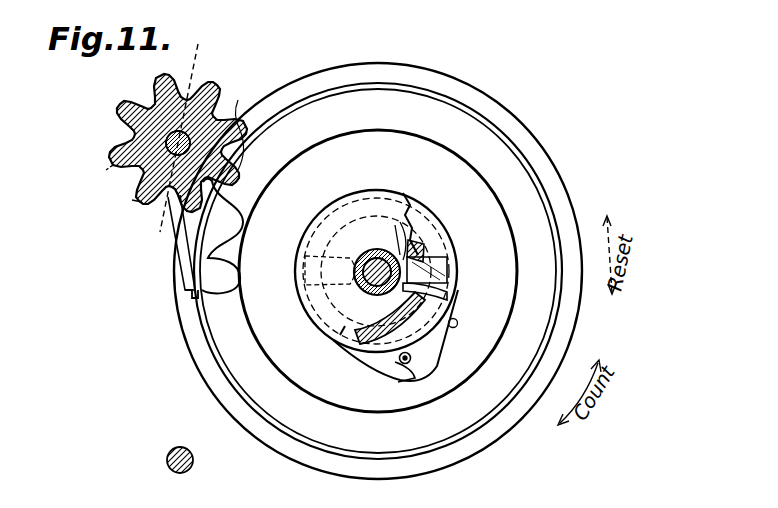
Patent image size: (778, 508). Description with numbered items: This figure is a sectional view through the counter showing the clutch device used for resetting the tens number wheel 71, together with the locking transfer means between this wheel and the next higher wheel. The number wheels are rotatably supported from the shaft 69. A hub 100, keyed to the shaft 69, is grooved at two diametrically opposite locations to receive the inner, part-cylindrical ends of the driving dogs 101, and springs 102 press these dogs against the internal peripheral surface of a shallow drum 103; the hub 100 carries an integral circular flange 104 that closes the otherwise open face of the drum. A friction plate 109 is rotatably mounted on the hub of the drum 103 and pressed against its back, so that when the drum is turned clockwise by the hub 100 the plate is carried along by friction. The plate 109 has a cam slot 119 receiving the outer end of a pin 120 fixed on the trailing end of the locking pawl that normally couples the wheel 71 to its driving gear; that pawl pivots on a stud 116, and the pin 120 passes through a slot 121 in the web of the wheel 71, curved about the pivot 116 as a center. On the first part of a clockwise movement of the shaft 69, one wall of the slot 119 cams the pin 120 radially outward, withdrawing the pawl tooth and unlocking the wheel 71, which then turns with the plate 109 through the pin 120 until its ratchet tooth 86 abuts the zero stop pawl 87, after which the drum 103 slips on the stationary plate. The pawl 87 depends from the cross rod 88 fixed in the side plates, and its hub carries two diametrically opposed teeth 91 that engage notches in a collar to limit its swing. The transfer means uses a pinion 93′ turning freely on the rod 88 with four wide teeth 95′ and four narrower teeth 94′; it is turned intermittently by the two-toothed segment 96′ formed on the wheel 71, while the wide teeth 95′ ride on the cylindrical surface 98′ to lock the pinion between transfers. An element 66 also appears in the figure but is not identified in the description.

The number wheel 71 is at (551, 174).
The cylindrical surface 98′ is at (553, 320).
The circular flange 104 is at (370, 173).
The shaft 69 is at (383, 258).
The hub 100 is at (410, 250).
The shallow drum 103 is at (447, 240).
The driving dogs 101 is at (304, 280).
The springs 102 is at (450, 290).
The pin 120 is at (398, 368).
The friction plate 109 is at (383, 365).
The stud 116 is at (458, 323).
The cam slot 119 is at (411, 357).
The slot 121 is at (405, 380).
The pinion 93′ is at (106, 146).
The cross rod 88 is at (232, 98).
The teeth 91 is at (203, 47).
The wide teeth 95′ is at (87, 179).
The teeth 94′ is at (132, 200).
The pawl 87 is at (187, 270).
The ratchet tooth 86 is at (194, 298).
The segment 96′ is at (240, 210).
The pin 66 is at (172, 450).